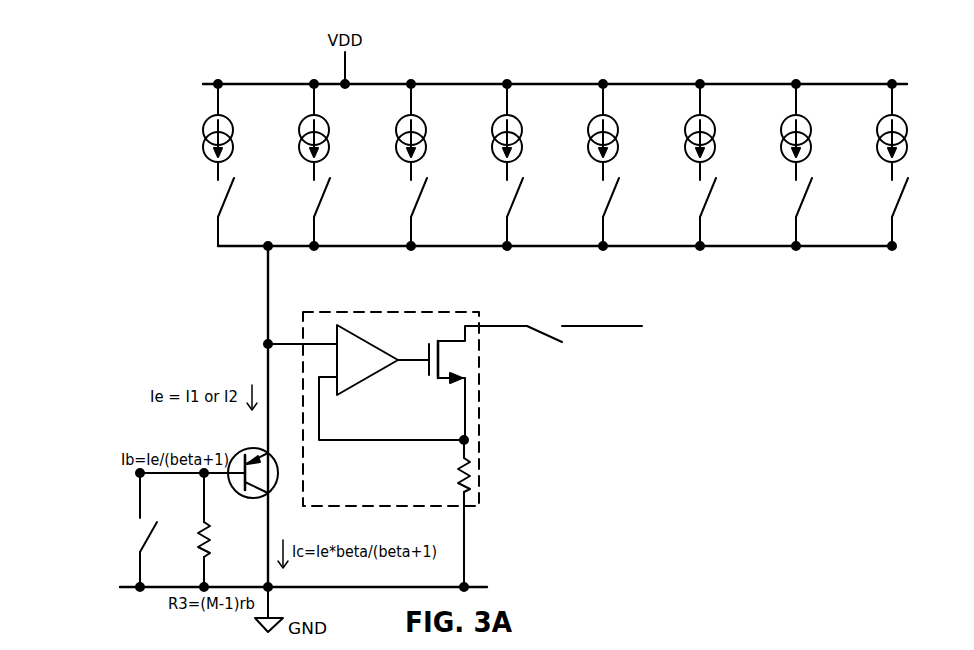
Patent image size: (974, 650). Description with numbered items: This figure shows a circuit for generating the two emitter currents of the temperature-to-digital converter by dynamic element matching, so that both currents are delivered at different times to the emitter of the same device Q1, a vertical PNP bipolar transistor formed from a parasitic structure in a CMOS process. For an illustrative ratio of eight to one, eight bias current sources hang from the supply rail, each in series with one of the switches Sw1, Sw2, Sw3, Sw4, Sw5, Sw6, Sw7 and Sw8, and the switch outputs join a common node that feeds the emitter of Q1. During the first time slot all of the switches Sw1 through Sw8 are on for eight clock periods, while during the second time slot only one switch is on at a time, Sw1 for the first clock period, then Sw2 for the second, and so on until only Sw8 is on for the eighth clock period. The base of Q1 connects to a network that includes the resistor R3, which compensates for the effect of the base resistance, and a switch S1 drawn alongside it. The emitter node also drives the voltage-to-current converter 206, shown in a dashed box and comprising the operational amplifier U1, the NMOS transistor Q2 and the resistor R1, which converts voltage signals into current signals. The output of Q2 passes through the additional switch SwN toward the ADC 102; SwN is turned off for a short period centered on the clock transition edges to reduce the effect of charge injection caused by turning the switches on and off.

The voltage-to-current converter 206 is at (415, 428).
The ADC (analog to digital converter) 102 is at (651, 327).
The switch Sw1 is at (235, 163).
The switch Sw2 is at (331, 165).
The switch Sw3 is at (428, 165).
The switch Sw4 is at (524, 165).
The switch Sw5 is at (620, 165).
The switch Sw6 is at (717, 165).
The switch Sw7 is at (813, 165).
The switch Sw8 is at (909, 165).
The additional switch SwN is at (542, 323).
The vertical PNP bipolar transistor Q1 is at (217, 473).
The NMOS transistor Q2 is at (478, 383).
The operational amplifier U1 is at (371, 373).
The resistor R1 is at (453, 515).
The resistor R3 is at (218, 532).
The base switch S1 is at (135, 532).